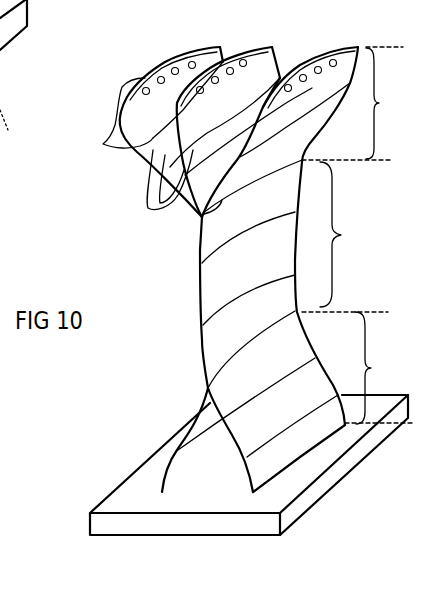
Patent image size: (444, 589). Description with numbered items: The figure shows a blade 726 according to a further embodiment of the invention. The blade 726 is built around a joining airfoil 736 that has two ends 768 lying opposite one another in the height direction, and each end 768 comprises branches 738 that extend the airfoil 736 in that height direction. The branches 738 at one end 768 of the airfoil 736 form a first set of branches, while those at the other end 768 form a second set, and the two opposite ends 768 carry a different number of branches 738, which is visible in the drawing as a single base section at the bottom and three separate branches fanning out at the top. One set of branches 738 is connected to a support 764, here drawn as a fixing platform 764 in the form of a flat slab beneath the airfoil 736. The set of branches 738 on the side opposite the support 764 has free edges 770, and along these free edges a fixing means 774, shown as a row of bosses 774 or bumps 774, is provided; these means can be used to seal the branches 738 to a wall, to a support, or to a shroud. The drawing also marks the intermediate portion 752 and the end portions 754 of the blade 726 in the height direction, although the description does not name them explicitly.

The blade 726 is at (105, 278).
The joining airfoil 736 is at (227, 286).
The branches 738 is at (148, 210).
The middle section 752 is at (349, 234).
The end section 754 is at (357, 235).
The support 764 is at (107, 520).
The ends 768 is at (201, 226).
The free edges 770 is at (108, 145).
The fixing means 774 is at (305, 58).